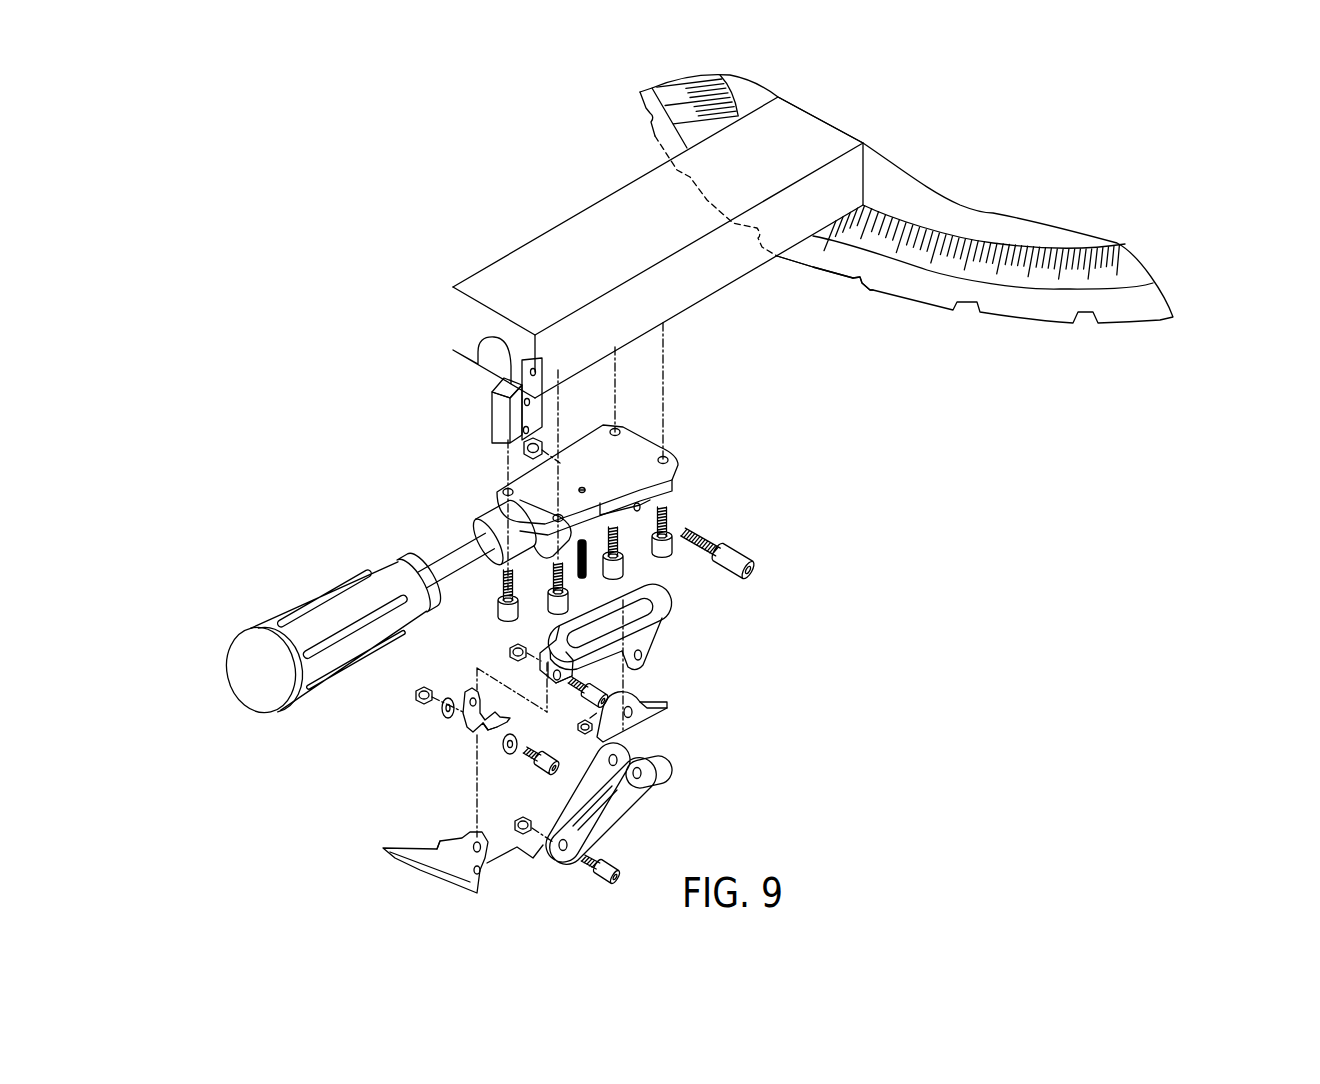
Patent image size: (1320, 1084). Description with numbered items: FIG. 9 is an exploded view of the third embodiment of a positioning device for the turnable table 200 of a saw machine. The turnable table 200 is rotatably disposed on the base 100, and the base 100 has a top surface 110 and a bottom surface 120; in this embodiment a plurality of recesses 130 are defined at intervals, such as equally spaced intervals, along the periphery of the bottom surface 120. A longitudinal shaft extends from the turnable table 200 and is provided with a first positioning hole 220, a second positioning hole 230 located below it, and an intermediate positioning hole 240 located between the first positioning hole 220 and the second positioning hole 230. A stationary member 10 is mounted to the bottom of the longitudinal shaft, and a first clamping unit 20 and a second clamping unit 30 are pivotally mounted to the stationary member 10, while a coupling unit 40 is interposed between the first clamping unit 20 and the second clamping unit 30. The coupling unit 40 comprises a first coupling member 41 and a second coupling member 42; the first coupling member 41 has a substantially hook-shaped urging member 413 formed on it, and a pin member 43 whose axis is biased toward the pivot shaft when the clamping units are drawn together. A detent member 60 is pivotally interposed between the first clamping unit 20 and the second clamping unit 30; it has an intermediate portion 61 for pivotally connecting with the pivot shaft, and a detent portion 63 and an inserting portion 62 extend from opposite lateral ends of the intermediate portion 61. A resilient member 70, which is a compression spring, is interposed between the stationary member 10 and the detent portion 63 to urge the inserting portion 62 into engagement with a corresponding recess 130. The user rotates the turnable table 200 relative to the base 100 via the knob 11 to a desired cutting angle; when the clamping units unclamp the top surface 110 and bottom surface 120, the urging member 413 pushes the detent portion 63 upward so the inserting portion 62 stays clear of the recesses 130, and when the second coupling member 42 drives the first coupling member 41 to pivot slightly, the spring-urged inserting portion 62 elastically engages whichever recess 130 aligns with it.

The turnable table 200 is at (681, 336).
The base 100 is at (951, 247).
The top surface 110 is at (922, 262).
The bottom surface 120 is at (818, 273).
The recesses 130 is at (862, 285).
The first positioning hole 220 is at (518, 365).
The intermediate positioning hole 240 is at (497, 390).
The second positioning hole 230 is at (497, 424).
The stationary member 10 is at (662, 437).
The resilient member 70 is at (571, 556).
The knob 11 is at (263, 623).
The first clamping unit 20 is at (682, 607).
The detent member 60 is at (653, 732).
The intermediate portion 61 is at (633, 702).
The inserting portion 62 is at (665, 707).
The detent portion 63 is at (587, 740).
The second clamping unit 30 is at (685, 770).
The coupling unit 40 is at (419, 789).
The first coupling member 41 is at (417, 738).
The urging member 413 is at (488, 733).
The pin member 43 is at (527, 756).
The second coupling member 42 is at (470, 838).